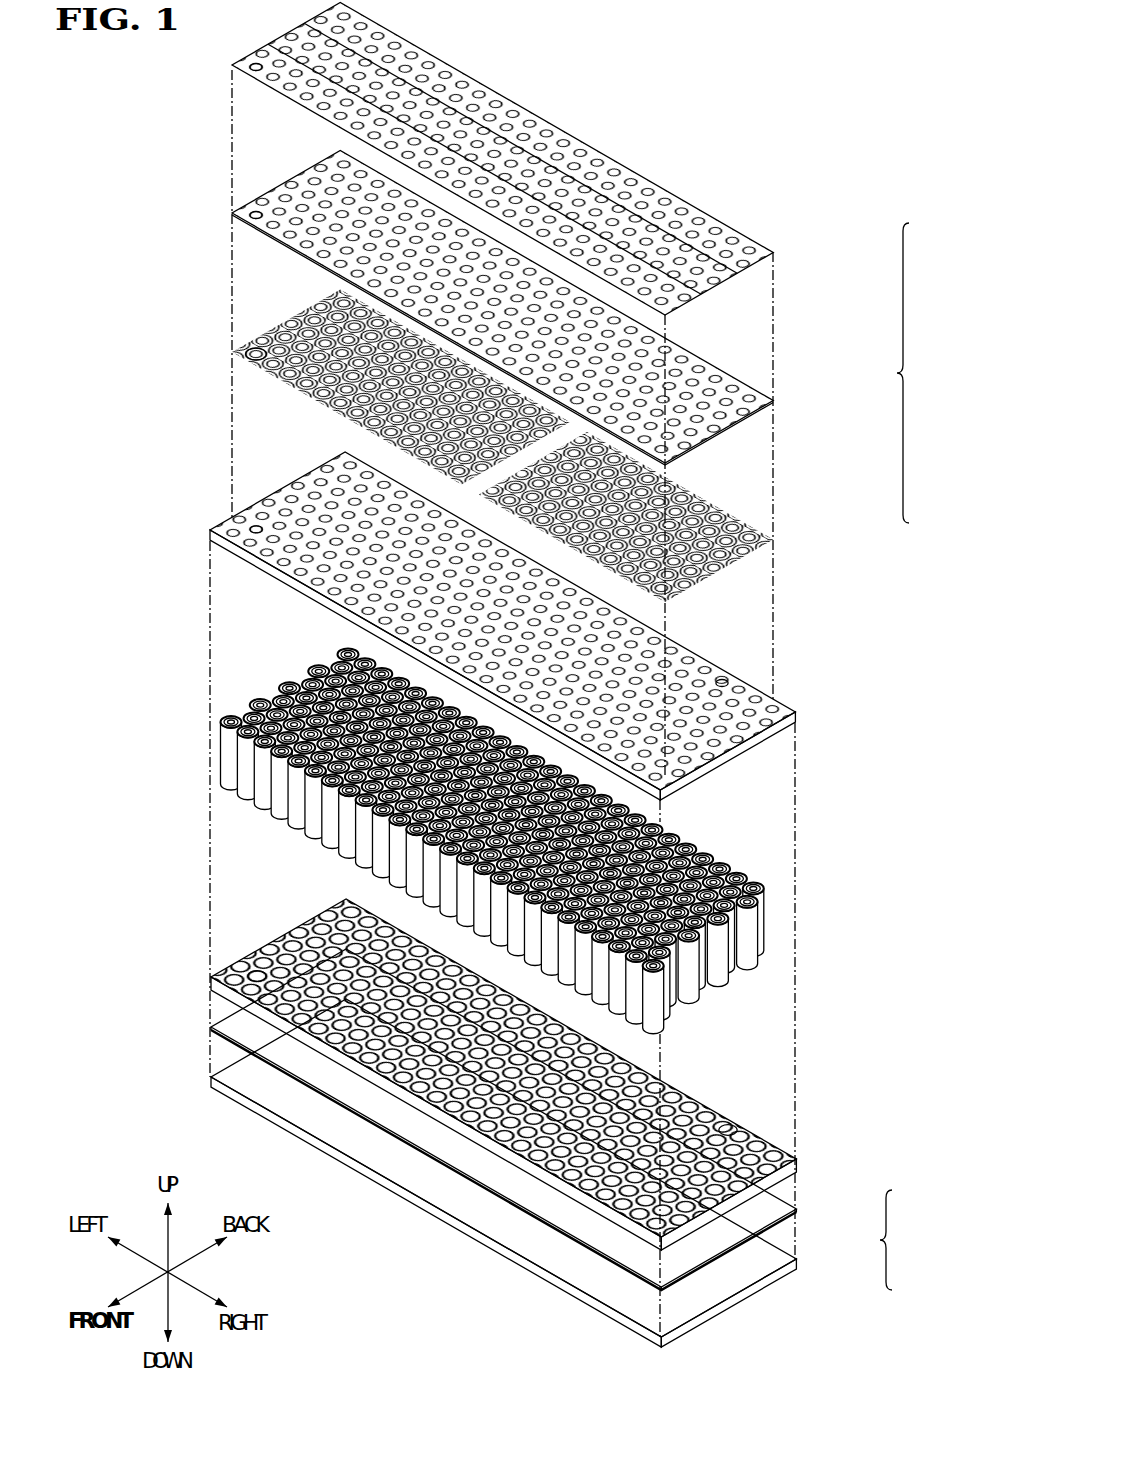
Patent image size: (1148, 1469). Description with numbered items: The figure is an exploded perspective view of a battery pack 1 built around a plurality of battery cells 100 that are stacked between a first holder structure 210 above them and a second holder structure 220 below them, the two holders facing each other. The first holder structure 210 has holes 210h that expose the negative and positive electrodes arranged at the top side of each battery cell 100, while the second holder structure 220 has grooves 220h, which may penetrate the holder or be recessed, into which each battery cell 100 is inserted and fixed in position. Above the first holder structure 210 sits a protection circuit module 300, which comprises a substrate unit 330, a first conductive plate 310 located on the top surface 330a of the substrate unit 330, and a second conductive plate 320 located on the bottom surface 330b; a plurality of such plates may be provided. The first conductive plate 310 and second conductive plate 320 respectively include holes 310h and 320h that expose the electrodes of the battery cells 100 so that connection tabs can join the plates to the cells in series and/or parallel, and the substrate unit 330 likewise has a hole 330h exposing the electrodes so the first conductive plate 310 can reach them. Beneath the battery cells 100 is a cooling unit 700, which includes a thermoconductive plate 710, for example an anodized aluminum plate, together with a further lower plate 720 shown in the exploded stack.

The battery pack 1 is at (692, 153).
The battery cells 100 is at (760, 948).
The first holder structure 210 is at (523, 626).
The holes 210h is at (255, 528).
The second holder structure 220 is at (528, 1074).
The grooves 220h is at (252, 967).
The protection circuit module 300 is at (547, 303).
The first conductive plate 310 is at (518, 159).
The holes 310h is at (253, 64).
The second conductive plate 320 is at (516, 446).
The holes 320h is at (250, 355).
The substrate unit 330 is at (516, 308).
The top surface 330a is at (762, 396).
The bottom surface 330b is at (762, 401).
The hole 330h is at (252, 208).
The cooling unit 700 is at (575, 1148).
The thermoconductive plate 710 is at (781, 1208).
The bottom plate 720 is at (781, 1272).